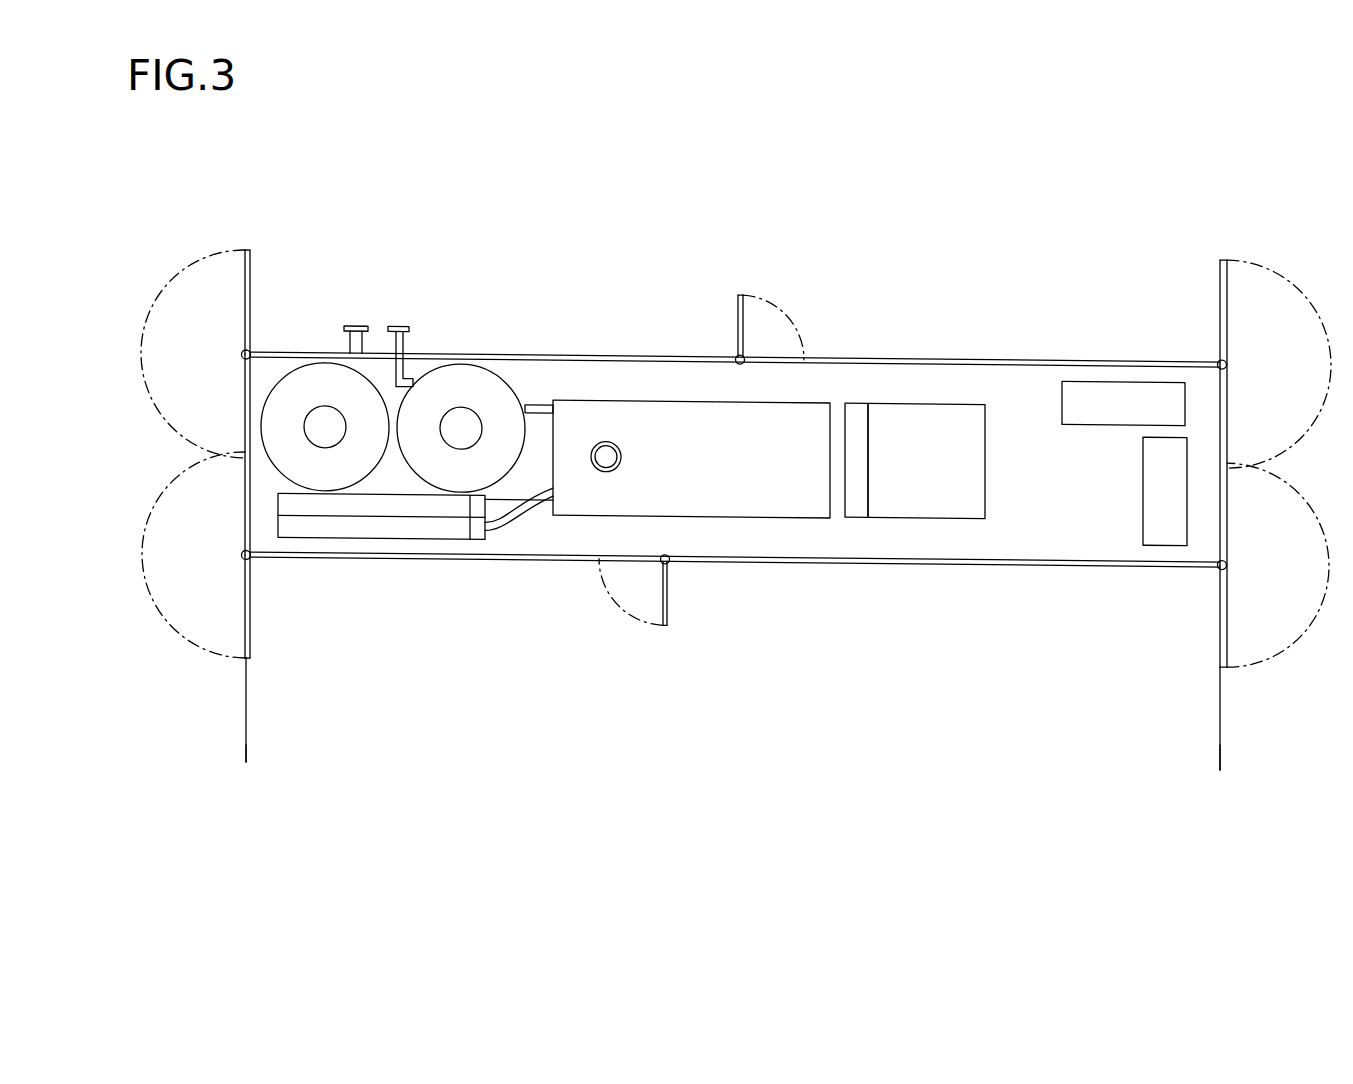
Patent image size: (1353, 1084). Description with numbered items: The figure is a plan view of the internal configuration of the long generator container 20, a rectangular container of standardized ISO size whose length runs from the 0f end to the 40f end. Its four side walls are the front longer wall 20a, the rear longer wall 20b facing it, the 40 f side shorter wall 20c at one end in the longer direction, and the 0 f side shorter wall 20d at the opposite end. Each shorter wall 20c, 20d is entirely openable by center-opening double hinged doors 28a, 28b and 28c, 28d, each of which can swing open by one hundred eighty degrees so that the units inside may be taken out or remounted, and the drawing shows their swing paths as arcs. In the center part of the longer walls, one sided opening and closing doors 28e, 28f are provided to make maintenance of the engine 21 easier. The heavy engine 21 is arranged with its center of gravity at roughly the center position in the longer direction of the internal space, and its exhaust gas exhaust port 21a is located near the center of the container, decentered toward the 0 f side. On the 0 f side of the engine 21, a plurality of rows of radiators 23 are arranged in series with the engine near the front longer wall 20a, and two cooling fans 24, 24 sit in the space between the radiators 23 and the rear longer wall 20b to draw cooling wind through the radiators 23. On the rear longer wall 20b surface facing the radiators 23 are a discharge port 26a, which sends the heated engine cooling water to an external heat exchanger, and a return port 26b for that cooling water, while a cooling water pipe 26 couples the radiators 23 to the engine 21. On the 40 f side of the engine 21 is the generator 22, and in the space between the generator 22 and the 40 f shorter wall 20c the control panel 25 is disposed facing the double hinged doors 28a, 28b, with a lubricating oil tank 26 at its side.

The generator container 20 is at (608, 217).
The front longer wall 20a is at (866, 575).
The rear longer wall 20b is at (863, 350).
The 40 f side shorter wall 20c is at (1240, 481).
The 0 f side shorter wall 20d is at (232, 472).
The engine 21 is at (750, 492).
The exhaust gas exhaust port 21a is at (606, 472).
The generator 22 is at (919, 495).
The radiators 23 is at (385, 527).
The cooling fans 24 is at (328, 480).
The control panel 25 is at (1163, 540).
The cooling water pipe 26 is at (537, 402).
The discharge port 26a is at (401, 325).
The return port 26b is at (355, 325).
The double hinged door 28a is at (1226, 665).
The double hinged door 28b is at (1230, 265).
The double hinged door 28c is at (241, 660).
The double hinged door 28d is at (246, 258).
The one sided opening and closing door 28e is at (668, 615).
The one sided opening and closing door 28f is at (738, 308).
The 0 f position 0f is at (256, 755).
The 40 f position 40f is at (1210, 763).